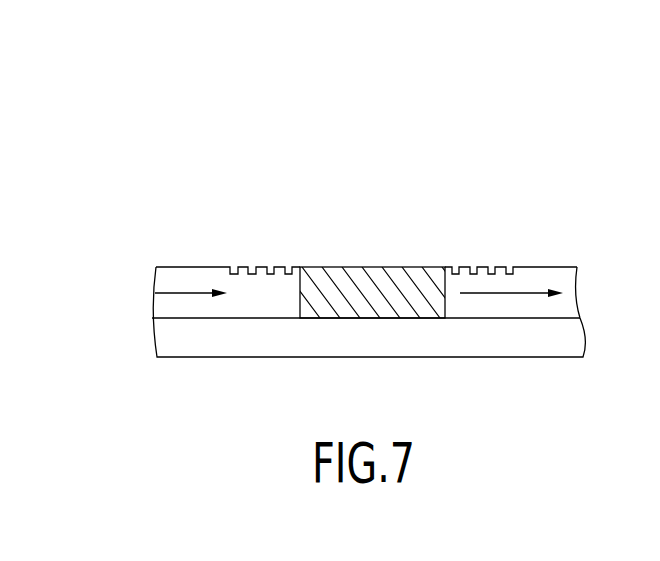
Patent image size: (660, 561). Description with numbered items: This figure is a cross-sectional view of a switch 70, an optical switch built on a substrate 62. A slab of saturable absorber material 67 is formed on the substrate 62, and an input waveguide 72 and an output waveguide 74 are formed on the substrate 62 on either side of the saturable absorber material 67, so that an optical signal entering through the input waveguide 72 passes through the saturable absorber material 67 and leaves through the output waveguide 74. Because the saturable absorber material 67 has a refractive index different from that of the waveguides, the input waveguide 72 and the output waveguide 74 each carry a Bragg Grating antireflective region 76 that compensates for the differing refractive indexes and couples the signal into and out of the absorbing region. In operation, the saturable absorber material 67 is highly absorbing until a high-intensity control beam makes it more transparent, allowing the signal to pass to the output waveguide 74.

The switch 70 is at (410, 153).
The substrate 62 is at (245, 343).
The input waveguide 72 is at (173, 308).
The output waveguide 74 is at (566, 281).
The Bragg Grating antireflective region 76 is at (469, 266).
The saturable absorber material 67 is at (378, 309).